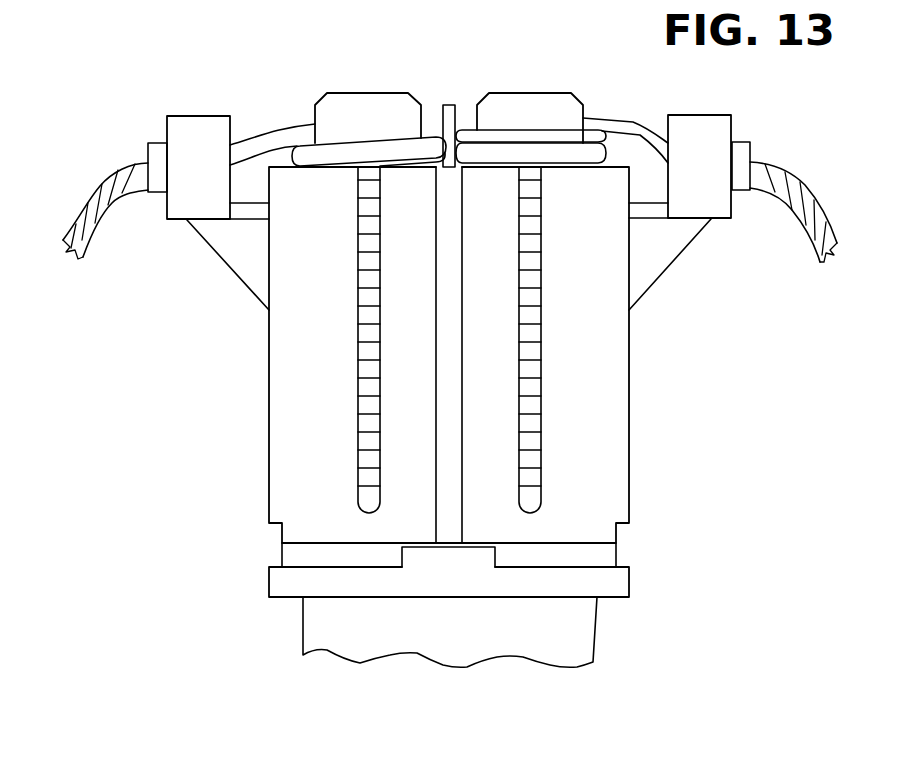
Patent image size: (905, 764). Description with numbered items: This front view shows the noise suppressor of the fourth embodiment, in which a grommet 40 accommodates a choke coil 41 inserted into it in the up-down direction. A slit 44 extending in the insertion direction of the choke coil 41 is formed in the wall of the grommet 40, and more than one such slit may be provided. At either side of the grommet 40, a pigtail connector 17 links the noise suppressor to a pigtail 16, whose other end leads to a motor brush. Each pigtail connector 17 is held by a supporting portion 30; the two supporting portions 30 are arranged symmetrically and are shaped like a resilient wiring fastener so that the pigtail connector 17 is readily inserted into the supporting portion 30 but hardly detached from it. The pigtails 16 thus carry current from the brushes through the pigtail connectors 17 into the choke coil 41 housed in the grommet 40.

The pigtail 16 is at (83, 254).
The pigtail connector 17 is at (156, 143).
The supporting portion 30 is at (214, 116).
The grommet 40 is at (632, 422).
The choke coil 41 is at (408, 152).
The slit 44 is at (372, 233).